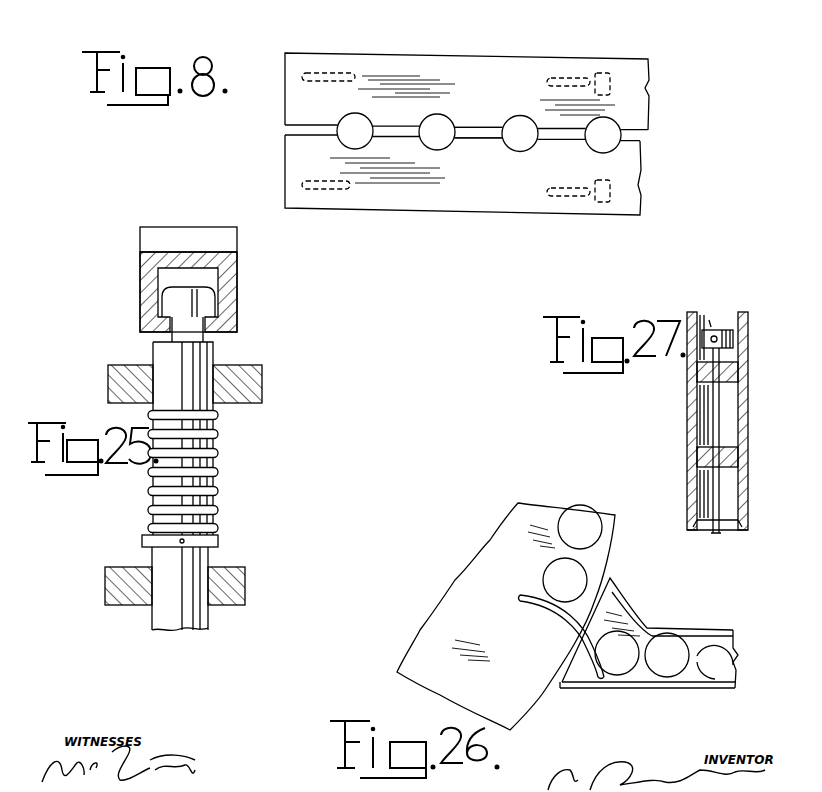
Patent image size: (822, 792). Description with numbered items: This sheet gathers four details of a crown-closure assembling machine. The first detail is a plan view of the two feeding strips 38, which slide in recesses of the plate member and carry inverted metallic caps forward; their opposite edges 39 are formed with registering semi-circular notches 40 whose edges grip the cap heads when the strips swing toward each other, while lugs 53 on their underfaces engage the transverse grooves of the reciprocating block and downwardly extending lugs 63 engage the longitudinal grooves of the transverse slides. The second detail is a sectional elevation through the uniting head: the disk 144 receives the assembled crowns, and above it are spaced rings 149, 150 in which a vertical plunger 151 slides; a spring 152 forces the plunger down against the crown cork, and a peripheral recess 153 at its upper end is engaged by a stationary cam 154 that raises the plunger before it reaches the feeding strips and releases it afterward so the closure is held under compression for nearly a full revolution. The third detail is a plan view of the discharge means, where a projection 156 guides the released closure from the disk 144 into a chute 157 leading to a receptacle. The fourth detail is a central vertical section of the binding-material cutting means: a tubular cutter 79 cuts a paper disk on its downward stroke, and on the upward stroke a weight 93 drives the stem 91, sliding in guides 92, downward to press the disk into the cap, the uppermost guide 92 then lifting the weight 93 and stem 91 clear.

In FIG. 8, the feeding strip 38 is at (437, 65).
In FIG. 8, the opposite edge 39 is at (480, 127).
In FIG. 8, the semi-circular notch 40 is at (520, 125).
In FIG. 8, the lug 53 is at (662, 191).
In FIG. 8, the lug 63 is at (323, 77).
In FIG. 25, the ring 149 is at (245, 586).
In FIG. 25, the ring 150 is at (262, 391).
In FIG. 25, the plunger 151 is at (215, 355).
In FIG. 25, the spring 152 is at (218, 477).
In FIG. 25, the peripheral recess 153 is at (168, 334).
In FIG. 25, the stationary cam 154 is at (210, 324).
In FIG. 26, the disk 144 is at (597, 553).
In FIG. 26, the projection 156 is at (545, 604).
In FIG. 26, the chute 157 is at (686, 630).
In FIG. 27, the tubular cutter 79 is at (748, 425).
In FIG. 27, the stem 91 is at (719, 532).
In FIG. 27, the guide 92 is at (722, 373).
In FIG. 27, the weight 93 is at (734, 338).